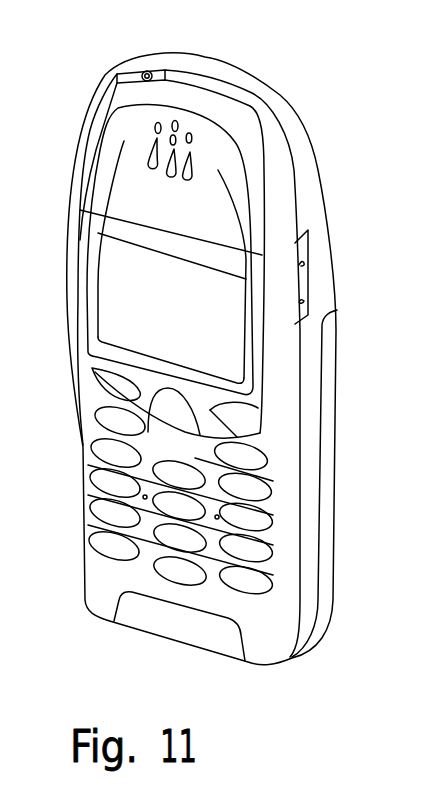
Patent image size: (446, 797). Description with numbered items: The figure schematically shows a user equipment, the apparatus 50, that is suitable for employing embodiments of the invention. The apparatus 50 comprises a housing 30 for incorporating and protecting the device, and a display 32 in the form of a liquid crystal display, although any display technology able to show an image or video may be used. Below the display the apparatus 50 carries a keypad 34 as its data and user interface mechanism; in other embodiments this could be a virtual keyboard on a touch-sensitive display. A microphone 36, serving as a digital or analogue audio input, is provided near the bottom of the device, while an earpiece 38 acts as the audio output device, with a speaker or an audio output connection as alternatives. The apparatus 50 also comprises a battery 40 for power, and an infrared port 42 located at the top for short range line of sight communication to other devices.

The apparatus 50 is at (286, 68).
The housing 30 is at (312, 187).
The battery 40 is at (327, 577).
The infrared port 42 is at (192, 83).
The earpiece 38 is at (157, 150).
The display 32 is at (232, 347).
The microphone 36 is at (133, 616).
The keypad 34 is at (243, 585).